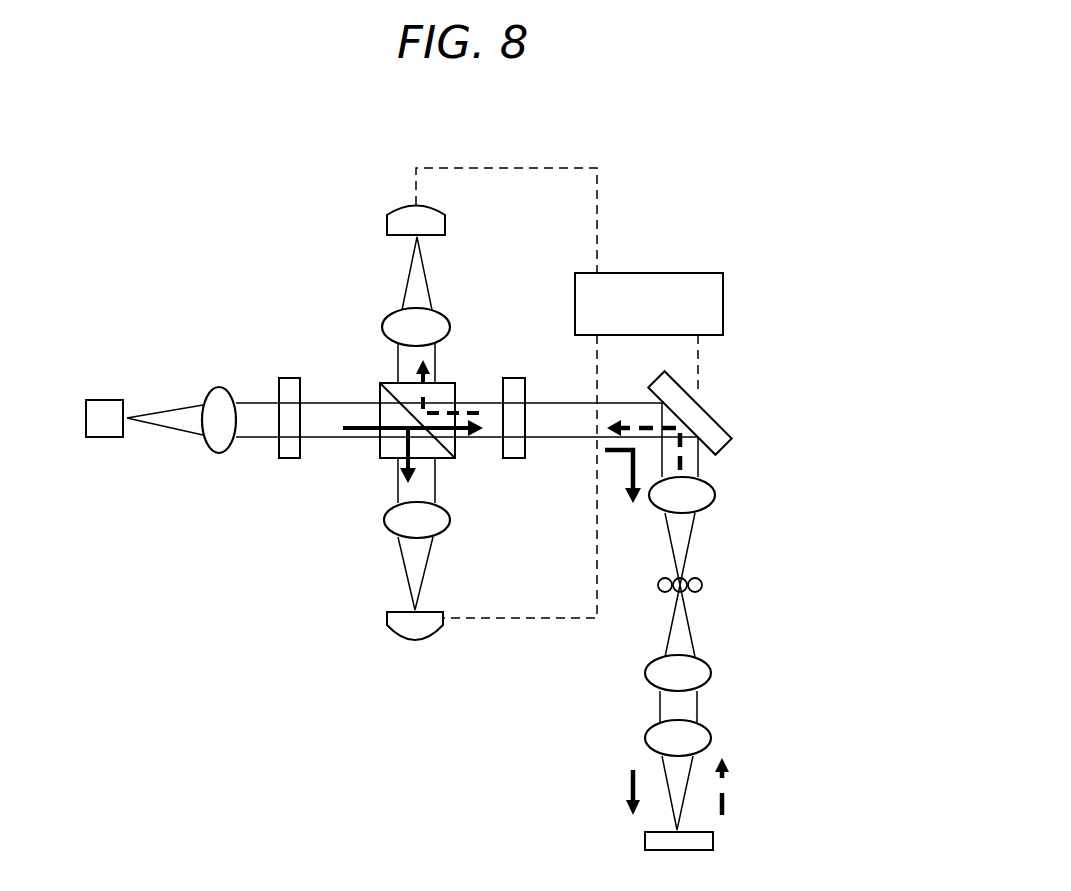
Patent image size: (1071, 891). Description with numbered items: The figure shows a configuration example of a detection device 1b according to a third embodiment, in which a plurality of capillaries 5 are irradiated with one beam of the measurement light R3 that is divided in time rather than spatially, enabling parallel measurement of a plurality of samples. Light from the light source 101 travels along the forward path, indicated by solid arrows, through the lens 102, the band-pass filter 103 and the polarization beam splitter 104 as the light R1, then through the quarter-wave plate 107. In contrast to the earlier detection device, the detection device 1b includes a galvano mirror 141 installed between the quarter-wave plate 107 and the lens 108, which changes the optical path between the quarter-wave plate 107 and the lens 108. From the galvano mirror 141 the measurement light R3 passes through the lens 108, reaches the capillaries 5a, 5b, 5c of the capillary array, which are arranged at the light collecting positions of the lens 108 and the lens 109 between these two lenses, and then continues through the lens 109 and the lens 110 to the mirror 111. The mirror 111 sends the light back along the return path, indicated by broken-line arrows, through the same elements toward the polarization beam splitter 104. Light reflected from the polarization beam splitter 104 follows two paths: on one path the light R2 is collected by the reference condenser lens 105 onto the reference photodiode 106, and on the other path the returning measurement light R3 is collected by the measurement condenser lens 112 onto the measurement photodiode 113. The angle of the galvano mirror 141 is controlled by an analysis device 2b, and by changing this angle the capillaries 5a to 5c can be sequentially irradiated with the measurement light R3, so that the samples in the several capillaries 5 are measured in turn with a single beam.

The detection device 1b is at (783, 200).
The analysis device 2b is at (660, 273).
The capillary 5 is at (704, 606).
The capillary 5a is at (658, 592).
The capillary 5b is at (683, 580).
The capillary 5c is at (702, 585).
The light source 101 is at (98, 438).
The lens 102 is at (213, 390).
The band-pass filter 103 is at (290, 378).
The polarization beam splitter 104 is at (380, 442).
The reference condenser lens 105 is at (388, 532).
The reference photodiode 106 is at (395, 637).
The λ/4 plate 107 is at (517, 380).
The lens 108 is at (715, 497).
The lens 109 is at (710, 673).
The lens 110 is at (712, 738).
The mirror 111 is at (713, 838).
The measurement condenser lens 112 is at (390, 313).
The measurement photodiode 113 is at (445, 222).
The galvano mirror 141 is at (728, 430).
The light R1 is at (335, 402).
The light R2 is at (427, 562).
The measurement light R3 is at (430, 288).